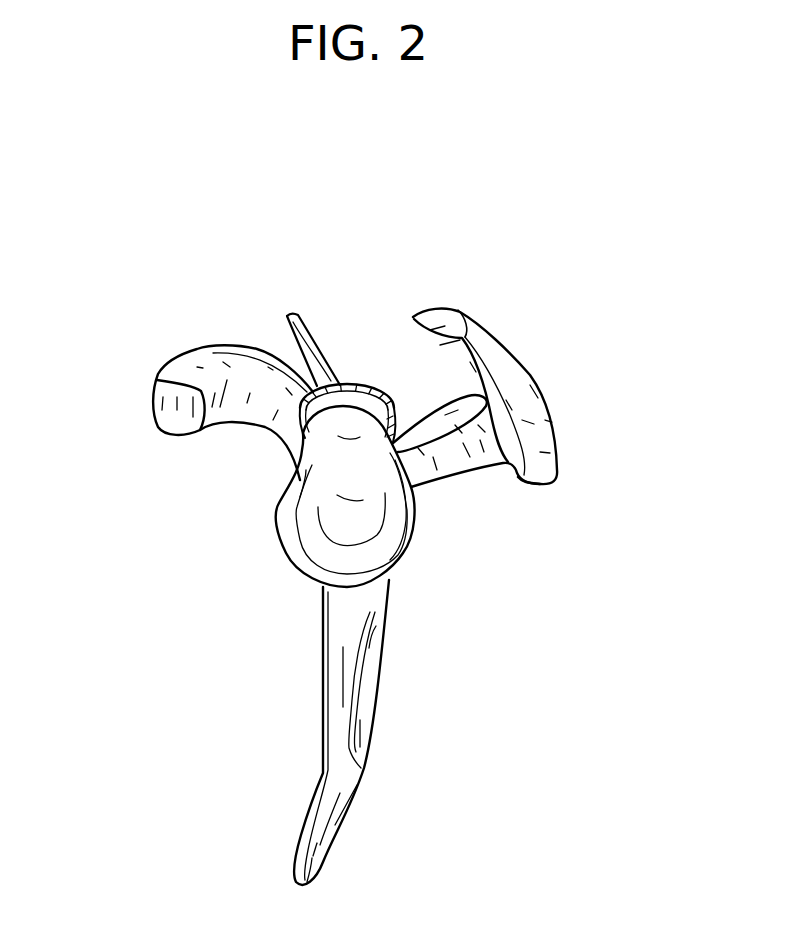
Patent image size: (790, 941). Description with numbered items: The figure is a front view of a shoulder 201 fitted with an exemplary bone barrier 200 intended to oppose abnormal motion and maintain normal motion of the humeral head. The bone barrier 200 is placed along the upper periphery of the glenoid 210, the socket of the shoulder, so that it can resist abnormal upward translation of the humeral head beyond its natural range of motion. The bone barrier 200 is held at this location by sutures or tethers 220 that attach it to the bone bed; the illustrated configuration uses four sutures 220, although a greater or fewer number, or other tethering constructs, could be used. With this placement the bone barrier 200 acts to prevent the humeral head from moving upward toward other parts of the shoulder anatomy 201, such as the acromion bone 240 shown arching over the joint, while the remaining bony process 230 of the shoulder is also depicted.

The shoulder 201 is at (156, 208).
The bone barrier 200 is at (346, 368).
The glenoid 210 is at (281, 515).
The sutures or tethers 220 is at (369, 386).
The acromion arm 230 is at (191, 351).
The acromion bone 240 is at (563, 450).